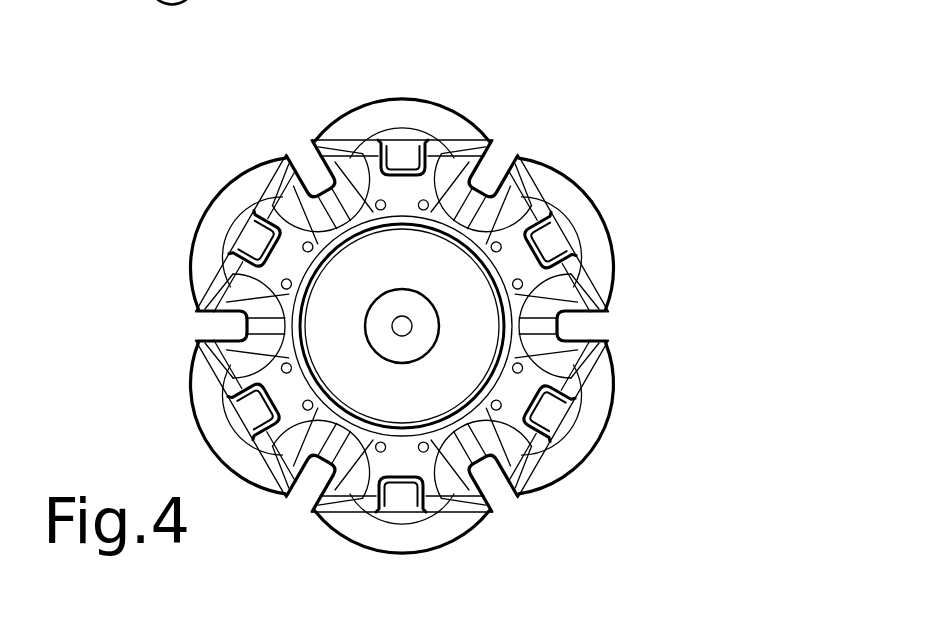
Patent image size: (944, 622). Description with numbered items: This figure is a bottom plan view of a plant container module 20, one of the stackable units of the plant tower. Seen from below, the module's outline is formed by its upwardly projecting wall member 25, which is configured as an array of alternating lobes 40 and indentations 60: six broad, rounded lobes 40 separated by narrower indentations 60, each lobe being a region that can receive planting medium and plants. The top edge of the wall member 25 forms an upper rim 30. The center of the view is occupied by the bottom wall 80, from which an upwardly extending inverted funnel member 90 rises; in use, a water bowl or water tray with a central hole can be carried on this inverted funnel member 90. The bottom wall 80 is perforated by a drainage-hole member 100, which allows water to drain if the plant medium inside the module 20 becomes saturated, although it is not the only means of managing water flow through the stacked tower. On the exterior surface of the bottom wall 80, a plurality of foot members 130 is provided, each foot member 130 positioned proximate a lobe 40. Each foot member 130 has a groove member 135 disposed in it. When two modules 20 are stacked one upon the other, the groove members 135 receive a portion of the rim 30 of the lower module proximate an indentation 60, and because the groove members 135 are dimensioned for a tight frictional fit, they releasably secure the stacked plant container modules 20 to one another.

The plant container module 20 is at (683, 98).
The upwardly projecting wall member 25 is at (602, 253).
The upper rim 30 is at (608, 292).
The lobe 40 is at (409, 98).
The indentation 60 is at (485, 168).
The bottom wall 80 is at (348, 170).
The inverted funnel member 90 is at (420, 312).
The drainage-hole member 100 is at (490, 141).
The foot member 130 is at (422, 145).
The groove member 135 is at (396, 145).